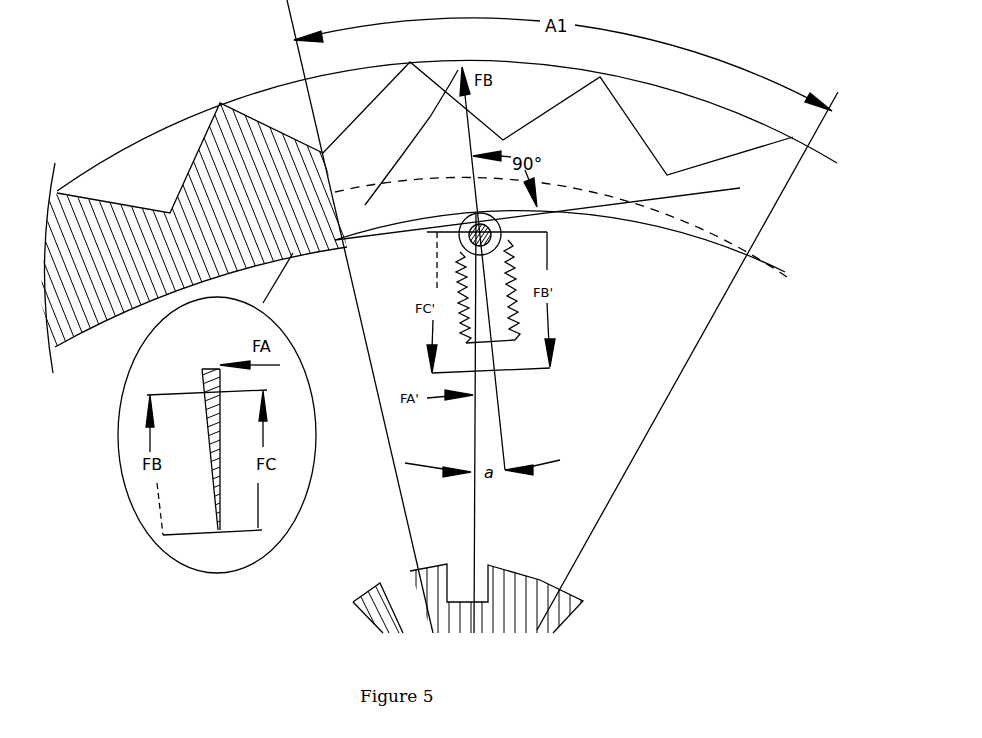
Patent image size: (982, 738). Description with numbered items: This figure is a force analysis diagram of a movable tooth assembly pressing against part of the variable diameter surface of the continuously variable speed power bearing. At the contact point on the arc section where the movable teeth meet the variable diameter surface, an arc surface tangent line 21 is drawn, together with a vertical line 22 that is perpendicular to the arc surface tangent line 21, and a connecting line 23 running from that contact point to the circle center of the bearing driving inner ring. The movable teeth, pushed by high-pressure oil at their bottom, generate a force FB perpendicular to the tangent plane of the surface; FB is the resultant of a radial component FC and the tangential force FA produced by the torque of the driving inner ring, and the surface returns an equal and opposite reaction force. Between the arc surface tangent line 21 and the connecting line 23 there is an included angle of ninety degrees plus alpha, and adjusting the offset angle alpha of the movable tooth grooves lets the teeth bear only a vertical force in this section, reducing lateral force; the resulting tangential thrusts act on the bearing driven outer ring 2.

The bearing driven outer ring 2 is at (217, 165).
The arc surface tangent line 21 is at (713, 193).
The vertical line 22 is at (497, 420).
The connecting line 23 is at (473, 503).